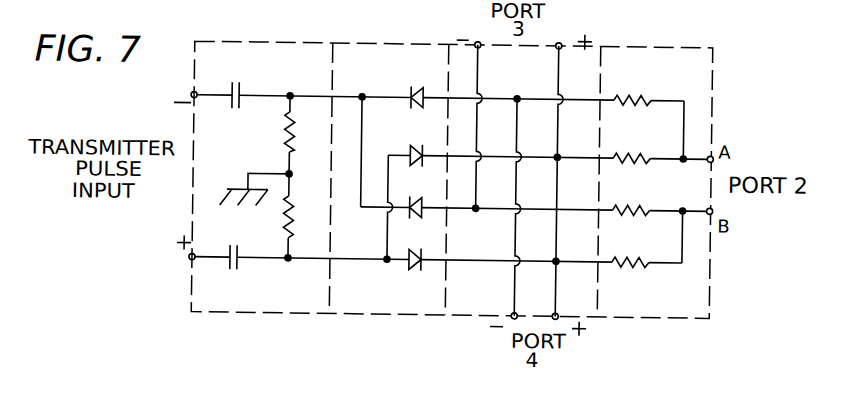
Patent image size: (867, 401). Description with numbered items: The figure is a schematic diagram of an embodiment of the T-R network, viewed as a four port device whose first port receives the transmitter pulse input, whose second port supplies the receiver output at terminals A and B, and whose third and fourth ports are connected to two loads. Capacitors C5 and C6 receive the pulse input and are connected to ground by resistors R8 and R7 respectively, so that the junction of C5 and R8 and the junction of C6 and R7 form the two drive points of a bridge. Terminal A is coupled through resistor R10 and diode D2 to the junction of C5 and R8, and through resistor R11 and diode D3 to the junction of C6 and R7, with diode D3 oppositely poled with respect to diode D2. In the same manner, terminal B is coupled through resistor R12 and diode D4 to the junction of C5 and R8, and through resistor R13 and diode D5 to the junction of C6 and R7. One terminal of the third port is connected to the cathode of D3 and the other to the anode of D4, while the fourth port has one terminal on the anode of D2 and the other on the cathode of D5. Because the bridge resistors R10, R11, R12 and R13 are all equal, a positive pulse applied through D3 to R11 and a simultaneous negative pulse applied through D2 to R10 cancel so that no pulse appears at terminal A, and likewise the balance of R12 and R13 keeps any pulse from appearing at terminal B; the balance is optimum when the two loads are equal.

The capacitor C5 is at (235, 104).
The capacitor C6 is at (237, 268).
The resistor R7 is at (272, 216).
The resistor R8 is at (273, 131).
The resistor R10 is at (632, 112).
The resistor R11 is at (633, 171).
The resistor R12 is at (630, 222).
The resistor R13 is at (630, 275).
The diode D2 is at (420, 86).
The diode D3 is at (419, 144).
The diode D4 is at (419, 195).
The diode D5 is at (420, 247).